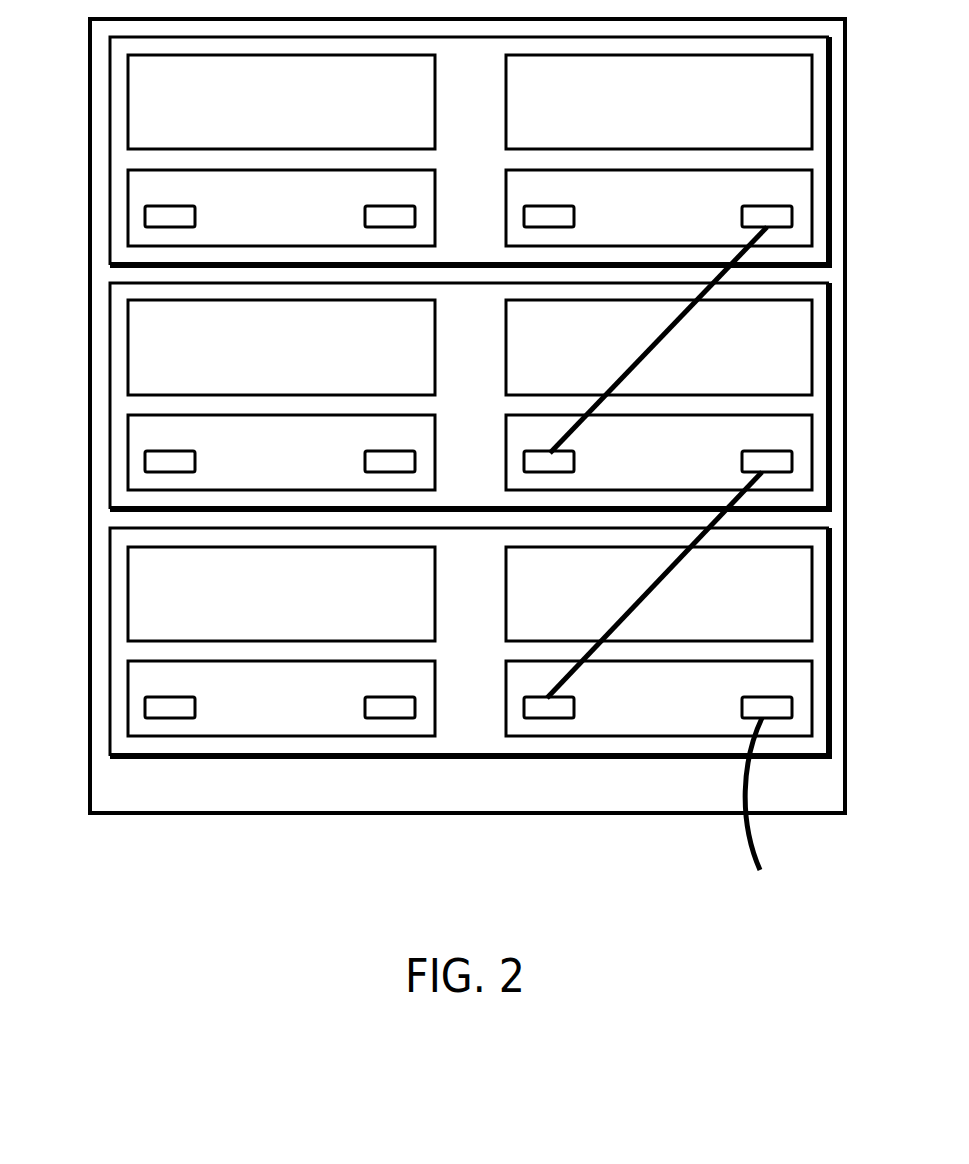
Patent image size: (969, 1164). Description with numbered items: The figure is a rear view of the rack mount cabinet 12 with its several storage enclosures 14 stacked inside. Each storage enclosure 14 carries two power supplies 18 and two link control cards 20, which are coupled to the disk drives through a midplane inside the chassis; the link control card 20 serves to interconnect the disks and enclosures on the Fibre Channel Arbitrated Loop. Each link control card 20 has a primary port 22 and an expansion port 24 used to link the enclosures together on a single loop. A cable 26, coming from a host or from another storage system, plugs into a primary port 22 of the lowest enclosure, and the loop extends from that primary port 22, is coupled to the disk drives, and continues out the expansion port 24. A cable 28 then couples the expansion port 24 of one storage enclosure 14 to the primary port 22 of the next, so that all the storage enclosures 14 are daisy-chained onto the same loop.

The rack mount cabinet 12 is at (90, 212).
The storage enclosure 14 is at (107, 458).
The power supply 18 is at (125, 588).
The link control card 20 is at (125, 695).
The primary port 22 is at (364, 712).
The expansion port 24 is at (193, 712).
The cable 26 is at (757, 843).
The cable 28 is at (650, 588).